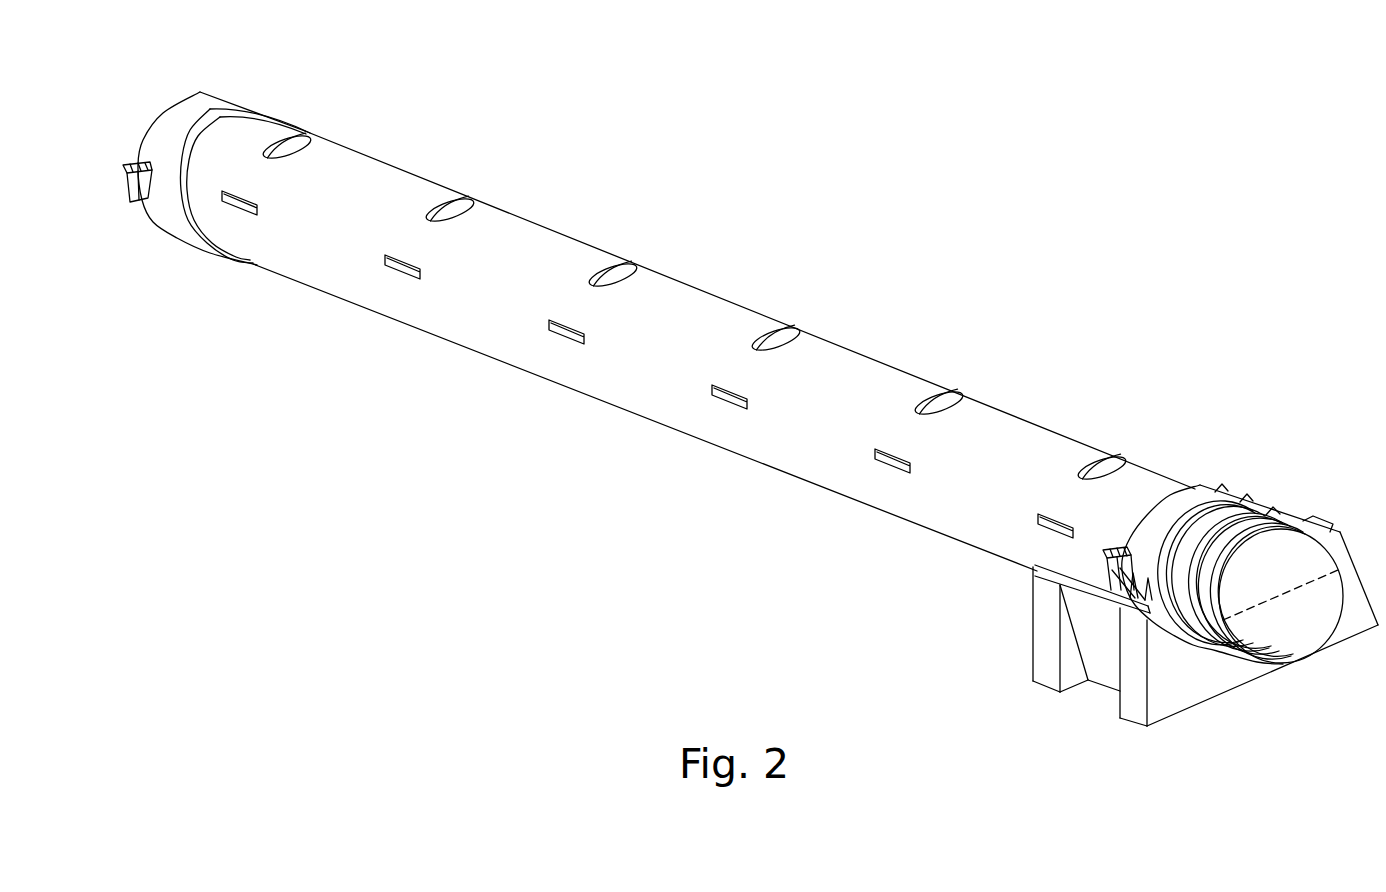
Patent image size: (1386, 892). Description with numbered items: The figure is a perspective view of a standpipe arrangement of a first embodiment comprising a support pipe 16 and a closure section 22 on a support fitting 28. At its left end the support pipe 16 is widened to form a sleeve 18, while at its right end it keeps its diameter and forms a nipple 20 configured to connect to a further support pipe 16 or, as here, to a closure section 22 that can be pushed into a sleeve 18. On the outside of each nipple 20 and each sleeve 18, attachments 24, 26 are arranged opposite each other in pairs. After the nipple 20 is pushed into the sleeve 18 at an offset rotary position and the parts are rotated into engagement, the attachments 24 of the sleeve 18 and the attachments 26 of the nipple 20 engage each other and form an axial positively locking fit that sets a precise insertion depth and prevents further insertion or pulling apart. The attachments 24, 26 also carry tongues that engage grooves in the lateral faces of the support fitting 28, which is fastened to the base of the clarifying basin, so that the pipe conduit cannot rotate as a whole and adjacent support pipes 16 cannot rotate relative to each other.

The support pipe 16 is at (718, 290).
The sleeve 18 is at (212, 110).
The nipple 20 is at (1186, 465).
The closure section 22 is at (1265, 506).
The attachment of the sleeve 24 is at (132, 204).
The attachment of the nipple 26 is at (1103, 583).
The support fitting 28 is at (1040, 653).